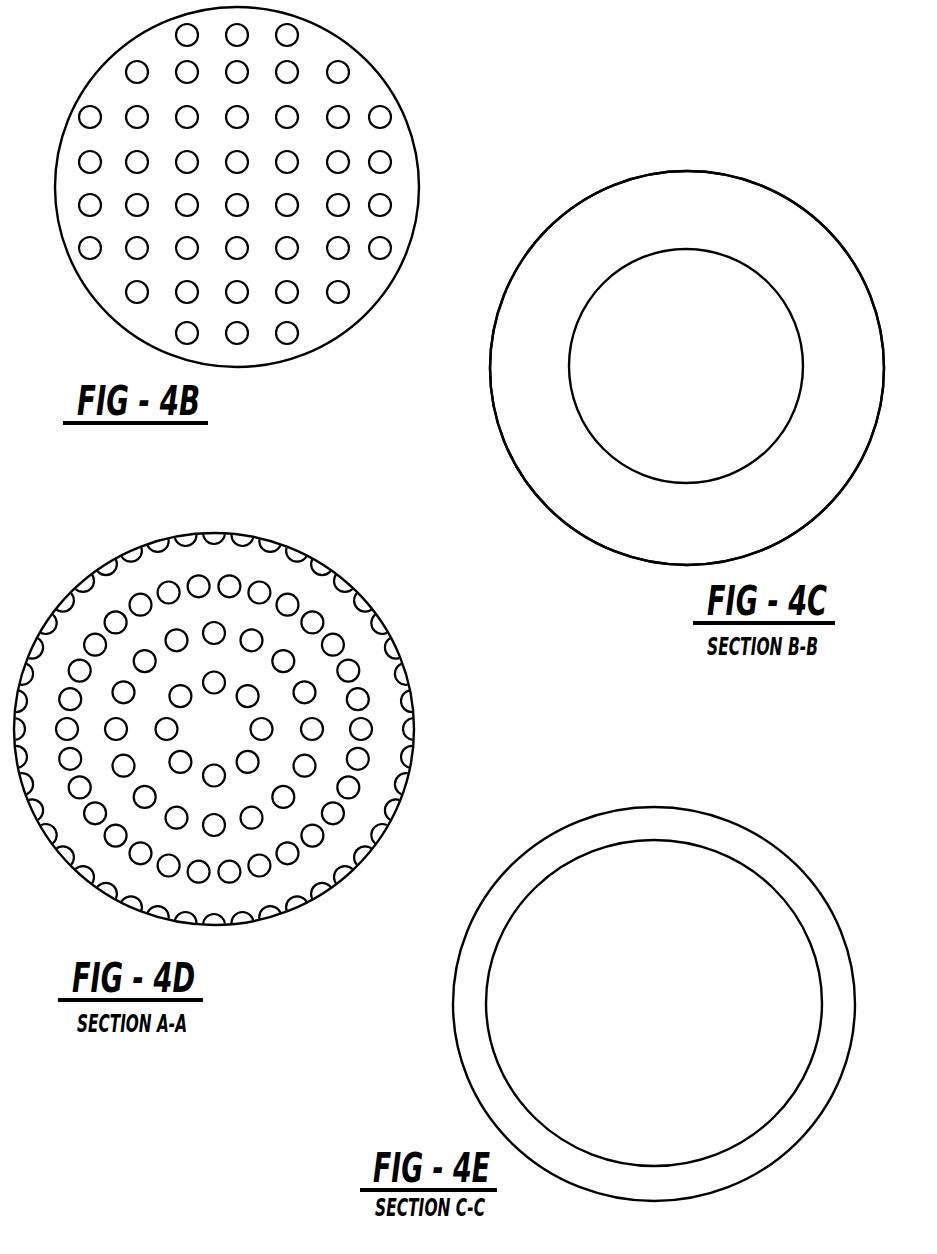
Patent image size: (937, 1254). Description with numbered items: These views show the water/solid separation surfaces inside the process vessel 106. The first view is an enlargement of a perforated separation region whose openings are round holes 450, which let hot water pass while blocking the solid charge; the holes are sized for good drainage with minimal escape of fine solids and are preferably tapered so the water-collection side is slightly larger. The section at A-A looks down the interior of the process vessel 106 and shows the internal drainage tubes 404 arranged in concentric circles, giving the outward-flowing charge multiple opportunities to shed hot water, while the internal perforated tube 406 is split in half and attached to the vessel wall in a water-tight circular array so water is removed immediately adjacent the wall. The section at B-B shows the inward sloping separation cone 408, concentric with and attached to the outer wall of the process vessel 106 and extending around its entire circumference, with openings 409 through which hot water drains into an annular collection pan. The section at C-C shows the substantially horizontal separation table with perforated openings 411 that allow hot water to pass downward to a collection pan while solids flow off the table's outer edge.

In FIG. 4B, the process vessel 106 is at (415, 151).
In FIG. 4C, the process vessel 106 is at (840, 237).
In FIG. 4D, the process vessel 106 is at (150, 539).
In FIG. 4E, the process vessel 106 is at (803, 873).
In FIG. 4B, the round holes 450 is at (294, 64).
In FIG. 4C, the openings 409 is at (593, 222).
In FIG. 4C, the separation cone 408 is at (533, 420).
In FIG. 4D, the internal drainage tubes 404 is at (297, 598).
In FIG. 4D, the internal perforated tube 406 is at (105, 886).
In FIG. 4E, the perforated openings 411 is at (672, 908).